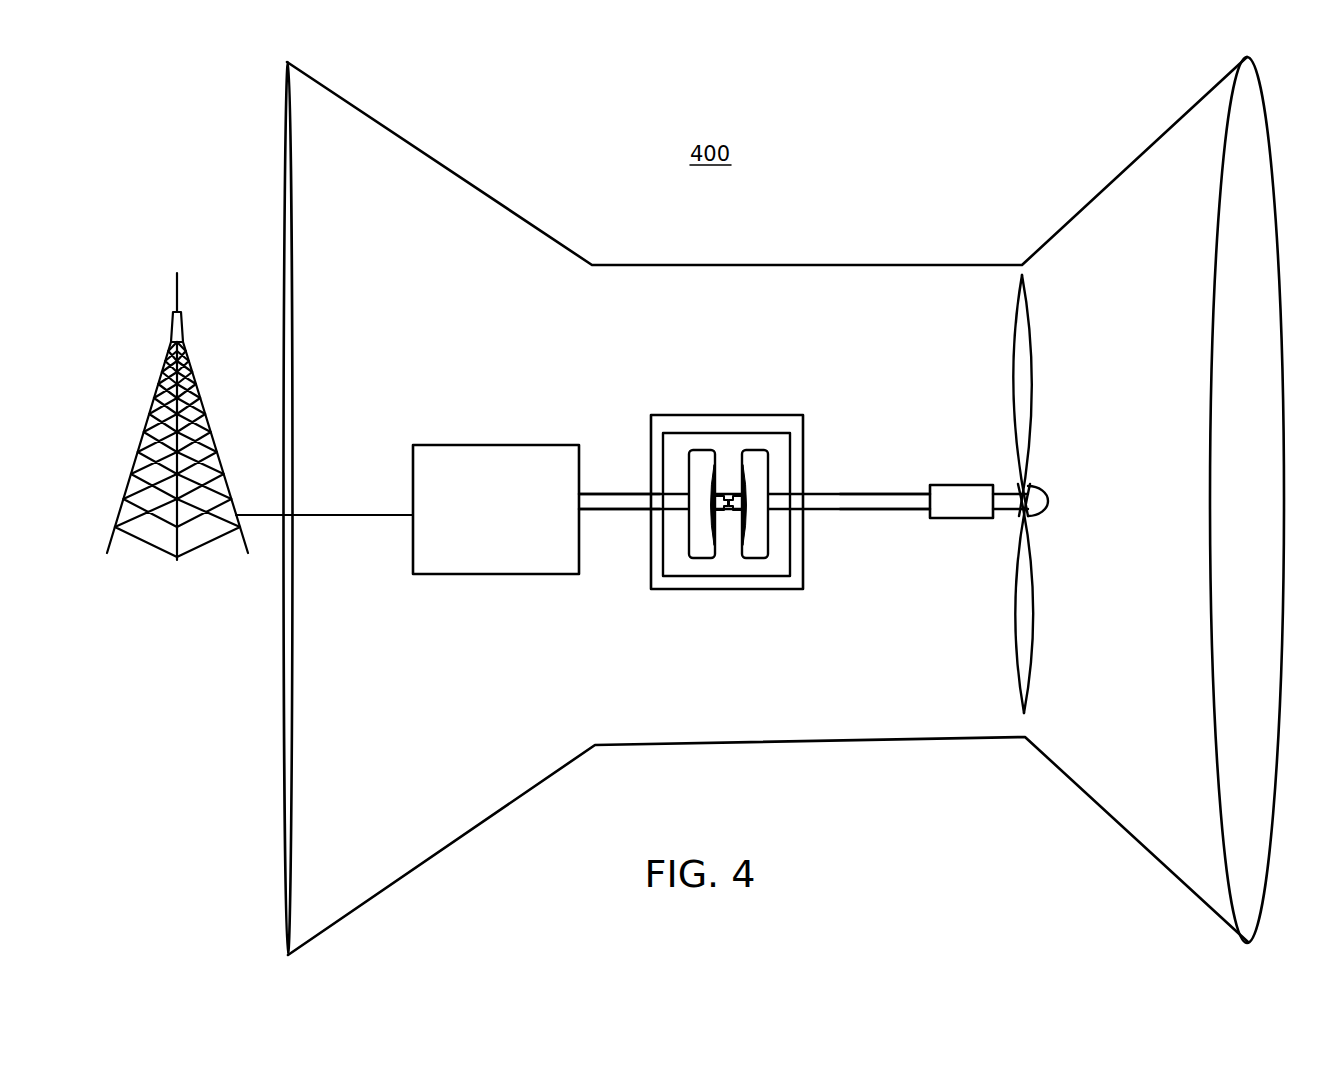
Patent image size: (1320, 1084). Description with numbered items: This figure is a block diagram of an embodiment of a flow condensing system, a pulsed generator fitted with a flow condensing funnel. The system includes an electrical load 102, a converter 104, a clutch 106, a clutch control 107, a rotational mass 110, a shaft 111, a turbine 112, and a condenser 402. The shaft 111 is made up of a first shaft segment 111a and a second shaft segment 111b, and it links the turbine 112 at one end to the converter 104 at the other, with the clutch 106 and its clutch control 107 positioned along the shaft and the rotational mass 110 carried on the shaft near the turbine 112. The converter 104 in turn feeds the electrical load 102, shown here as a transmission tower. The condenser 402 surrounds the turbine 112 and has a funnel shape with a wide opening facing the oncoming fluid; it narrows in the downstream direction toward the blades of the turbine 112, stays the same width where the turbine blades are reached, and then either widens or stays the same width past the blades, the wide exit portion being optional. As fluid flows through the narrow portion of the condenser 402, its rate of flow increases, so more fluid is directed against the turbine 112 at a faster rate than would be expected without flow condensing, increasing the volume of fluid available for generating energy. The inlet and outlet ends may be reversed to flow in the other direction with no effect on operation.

The condenser 402 is at (1185, 193).
The electrical load 102 is at (188, 333).
The converter 104 is at (427, 444).
The clutch 106 is at (752, 558).
The clutch control 107 is at (787, 415).
The rotational mass 110 is at (982, 485).
The shaft 111 is at (622, 492).
The first shaft segment 111a is at (912, 509).
The second shaft segment 111b is at (640, 508).
The turbine 112 is at (1032, 690).